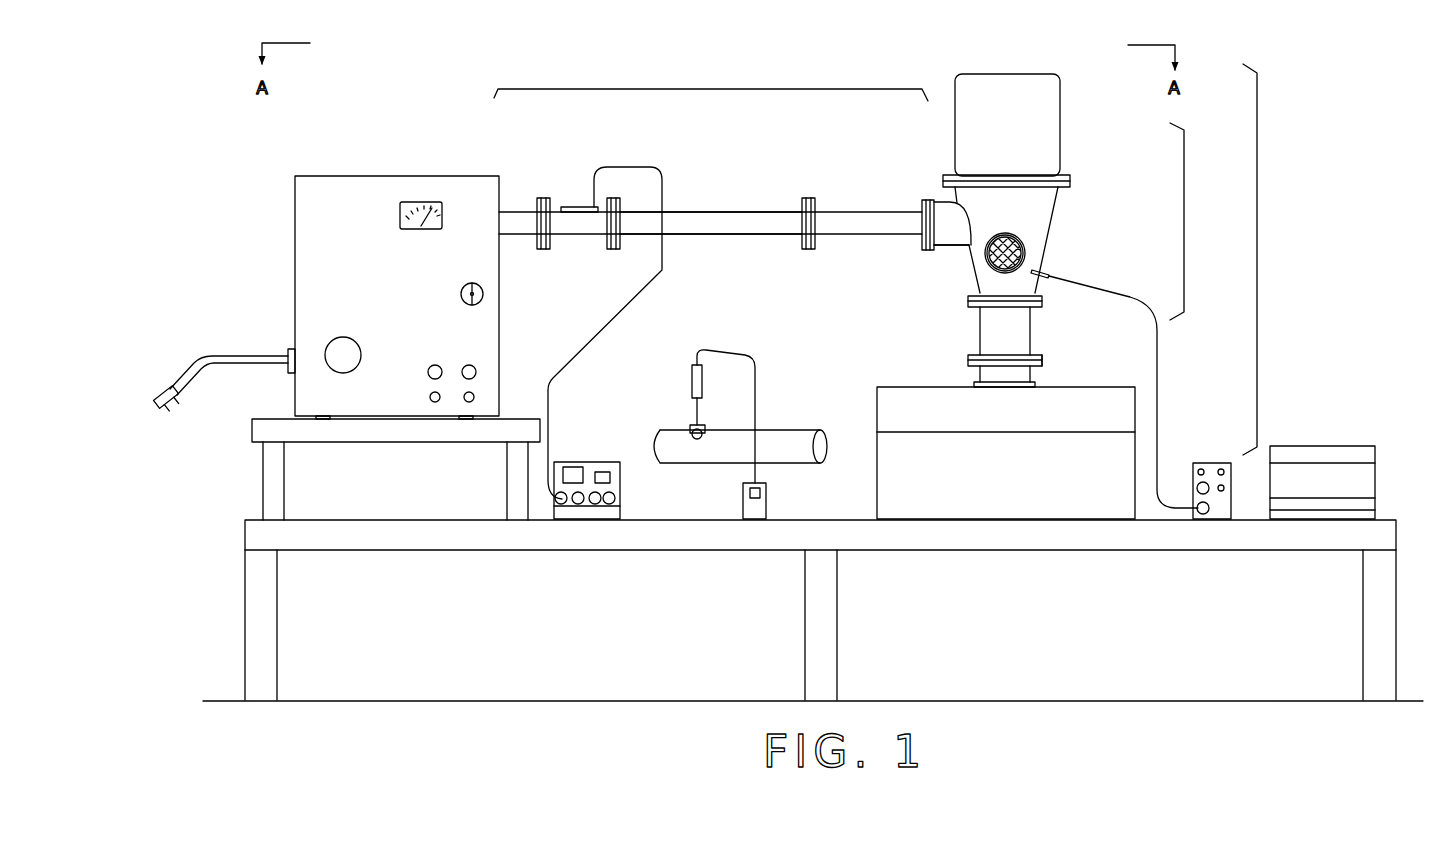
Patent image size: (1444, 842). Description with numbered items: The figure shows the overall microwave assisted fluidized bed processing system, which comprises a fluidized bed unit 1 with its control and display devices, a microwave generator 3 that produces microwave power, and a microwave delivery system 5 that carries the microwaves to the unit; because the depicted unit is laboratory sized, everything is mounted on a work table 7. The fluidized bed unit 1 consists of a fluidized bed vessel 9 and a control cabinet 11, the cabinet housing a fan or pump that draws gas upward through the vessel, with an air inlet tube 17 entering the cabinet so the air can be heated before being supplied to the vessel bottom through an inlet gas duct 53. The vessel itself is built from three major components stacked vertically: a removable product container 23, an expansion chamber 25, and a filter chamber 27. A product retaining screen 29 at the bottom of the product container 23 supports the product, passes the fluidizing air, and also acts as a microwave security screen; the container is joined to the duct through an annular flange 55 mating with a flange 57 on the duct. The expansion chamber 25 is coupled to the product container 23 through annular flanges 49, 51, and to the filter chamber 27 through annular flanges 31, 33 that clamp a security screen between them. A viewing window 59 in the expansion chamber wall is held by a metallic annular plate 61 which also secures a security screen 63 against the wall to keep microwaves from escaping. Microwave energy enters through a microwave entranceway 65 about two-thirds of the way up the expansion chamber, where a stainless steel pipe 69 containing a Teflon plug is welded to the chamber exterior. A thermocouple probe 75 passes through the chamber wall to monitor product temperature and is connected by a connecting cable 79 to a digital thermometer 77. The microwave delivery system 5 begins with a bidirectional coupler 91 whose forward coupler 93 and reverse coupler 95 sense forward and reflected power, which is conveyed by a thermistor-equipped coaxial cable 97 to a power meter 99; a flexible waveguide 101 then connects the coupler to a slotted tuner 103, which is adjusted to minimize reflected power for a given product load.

The fluidized bed unit 1 is at (1258, 275).
The microwave generator 3 is at (338, 174).
The microwave delivery system 5 is at (700, 86).
The work table 7 is at (1399, 643).
The fluidized bed vessel 9 is at (1186, 240).
The control cabinet 11 is at (1138, 402).
The air inlet tube 17 is at (788, 429).
The product container 23 is at (1032, 336).
The expansion chamber 25 is at (1058, 206).
The filter chamber 27 is at (953, 87).
The product retaining screen 29 is at (1044, 360).
The annular flange 31 is at (1073, 177).
The annular flange 33 is at (1073, 185).
The annular flange 49 is at (966, 295).
The annular flange 51 is at (966, 311).
The inlet gas duct 53 is at (974, 376).
The annular flange 55 is at (967, 354).
The flange 57 is at (966, 364).
The viewing window 59 is at (1014, 248).
The metallic annular plate 61 is at (1020, 236).
The security screen 63 is at (1033, 255).
The microwave entranceway 65 is at (941, 199).
The stainless steel pipe 69 is at (950, 249).
The thermocouple probe 75 is at (1043, 281).
The digital thermometer 77 is at (1194, 461).
The connecting cable 79 is at (1159, 423).
The bidirectional coupler 91 is at (580, 240).
The forward coupler 93 is at (566, 205).
The reverse coupler 95 is at (590, 203).
The coaxial cable 97 is at (660, 280).
The power meter 99 is at (591, 461).
The flexible waveguide 101 is at (713, 206).
The slotted tuner 103 is at (841, 207).